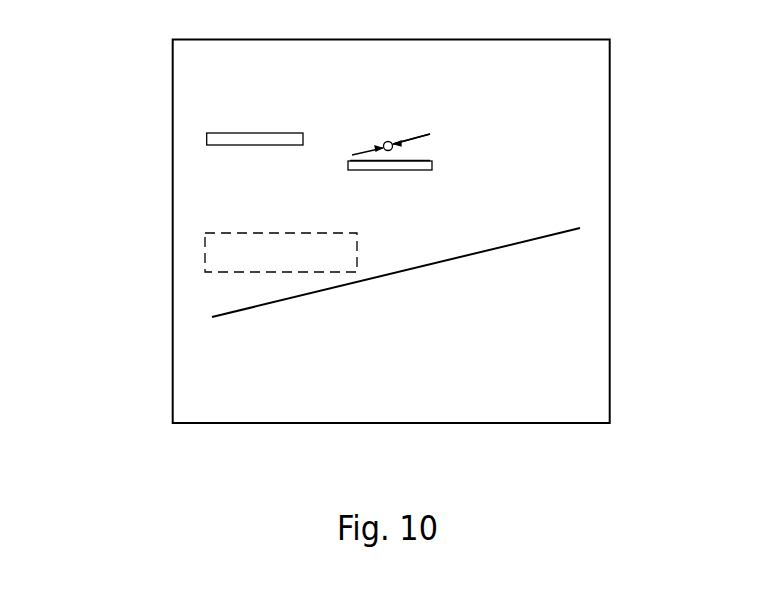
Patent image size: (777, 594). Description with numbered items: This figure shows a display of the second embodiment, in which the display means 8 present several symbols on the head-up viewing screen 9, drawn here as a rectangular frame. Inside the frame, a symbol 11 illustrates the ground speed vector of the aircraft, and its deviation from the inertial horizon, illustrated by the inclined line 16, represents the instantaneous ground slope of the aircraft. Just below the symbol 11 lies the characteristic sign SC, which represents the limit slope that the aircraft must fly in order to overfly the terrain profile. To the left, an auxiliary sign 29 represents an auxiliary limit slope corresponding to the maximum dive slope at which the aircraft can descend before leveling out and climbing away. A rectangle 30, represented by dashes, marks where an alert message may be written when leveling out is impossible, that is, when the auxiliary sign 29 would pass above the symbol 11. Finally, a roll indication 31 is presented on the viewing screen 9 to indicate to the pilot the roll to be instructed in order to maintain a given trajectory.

The display means 8 is at (124, 421).
The viewing screen 9 is at (610, 318).
The symbol illustrating the ground speed vector 11 is at (389, 142).
The line illustrating the inertial horizon 16 is at (488, 253).
The auxiliary sign 29 is at (259, 132).
The rectangle 30 is at (194, 252).
The roll indication 31 is at (431, 140).
The characteristic sign SC is at (397, 171).